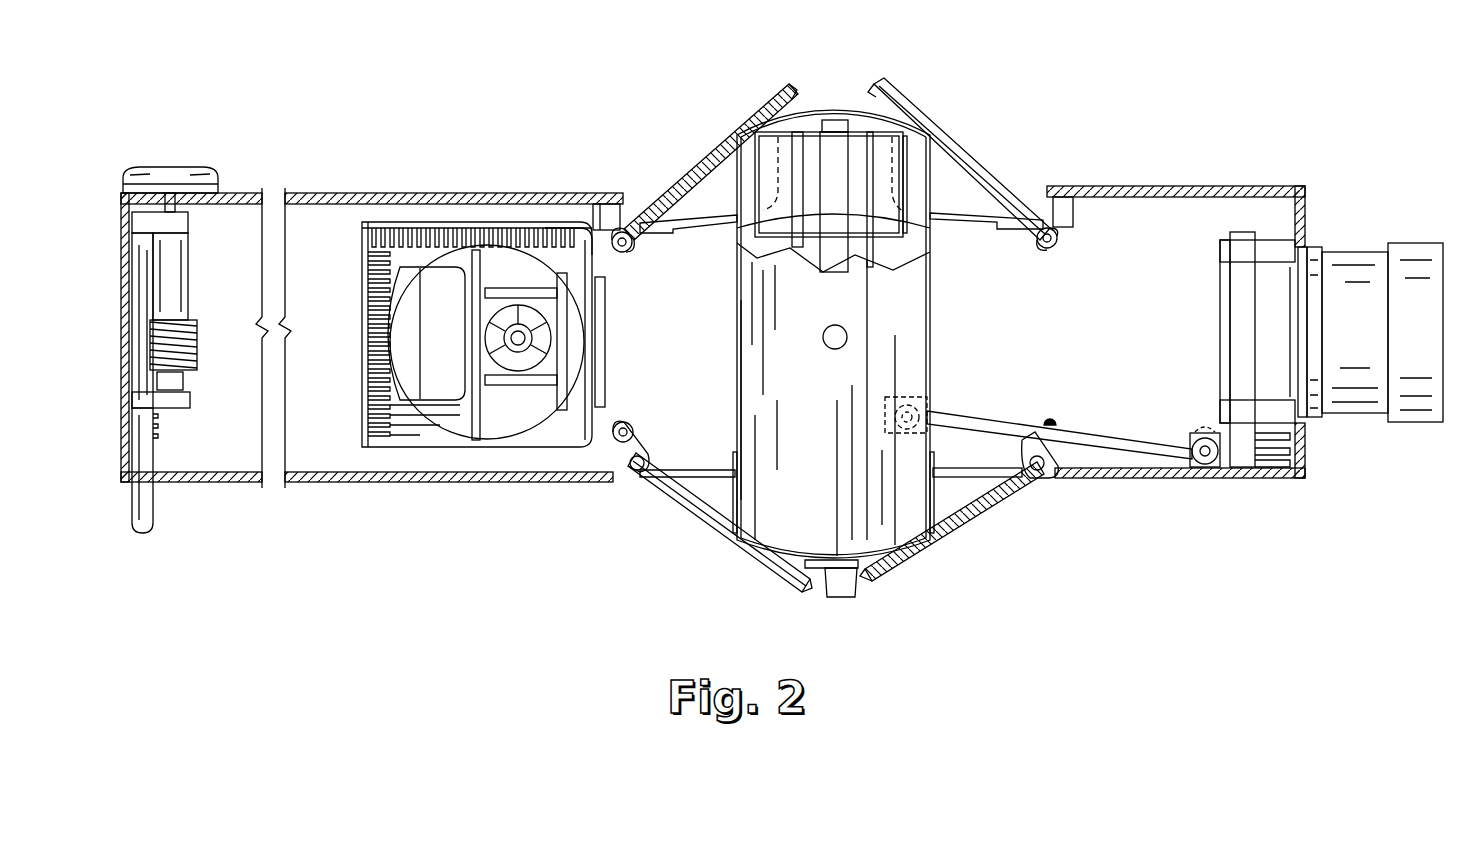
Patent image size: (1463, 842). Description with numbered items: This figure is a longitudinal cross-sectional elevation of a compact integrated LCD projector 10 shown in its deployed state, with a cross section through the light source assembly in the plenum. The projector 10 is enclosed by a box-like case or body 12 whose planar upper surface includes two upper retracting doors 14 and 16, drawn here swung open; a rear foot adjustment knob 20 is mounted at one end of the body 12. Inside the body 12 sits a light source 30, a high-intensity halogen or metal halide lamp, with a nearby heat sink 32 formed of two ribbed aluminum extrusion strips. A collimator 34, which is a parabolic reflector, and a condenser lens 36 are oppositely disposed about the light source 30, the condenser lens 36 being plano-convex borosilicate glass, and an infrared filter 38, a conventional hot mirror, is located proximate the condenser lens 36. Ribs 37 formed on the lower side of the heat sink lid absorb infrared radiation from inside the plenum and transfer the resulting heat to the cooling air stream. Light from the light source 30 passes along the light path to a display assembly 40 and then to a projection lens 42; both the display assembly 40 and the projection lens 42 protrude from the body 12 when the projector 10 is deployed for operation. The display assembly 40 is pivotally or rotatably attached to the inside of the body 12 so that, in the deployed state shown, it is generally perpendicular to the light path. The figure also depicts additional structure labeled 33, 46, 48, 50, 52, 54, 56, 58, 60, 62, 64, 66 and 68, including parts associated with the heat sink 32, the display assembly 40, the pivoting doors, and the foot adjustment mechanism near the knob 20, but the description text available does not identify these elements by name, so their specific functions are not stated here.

The compact electronic projector 10 is at (508, 115).
The body 12 is at (405, 193).
The upper retracting door 14 is at (717, 130).
The upper retracting door 16 is at (945, 125).
The rear foot adjustment knob 20 is at (178, 167).
The light source 30 is at (510, 333).
The heat sink 32 is at (362, 318).
The housing vents 33 is at (390, 427).
The collimator 34 is at (419, 350).
The condenser lens 36 is at (573, 377).
The ribs 37 is at (560, 243).
The infrared filter 38 is at (605, 350).
The display assembly 40 is at (948, 345).
The projection lens 42 is at (1340, 342).
The cartridge rods 46 is at (833, 250).
The cartridge frame 48 is at (797, 217).
The frame side 50 is at (880, 215).
The cartridge body 52 is at (787, 454).
The lower left louver 54 is at (708, 533).
The lower right louver 56 is at (963, 533).
The link 58 is at (1238, 380).
The plunger assembly 60 is at (204, 291).
The bottom stop 62 is at (840, 597).
The spring 64 is at (197, 340).
The plunger rod 66 is at (140, 432).
The plunger tip 68 is at (143, 537).